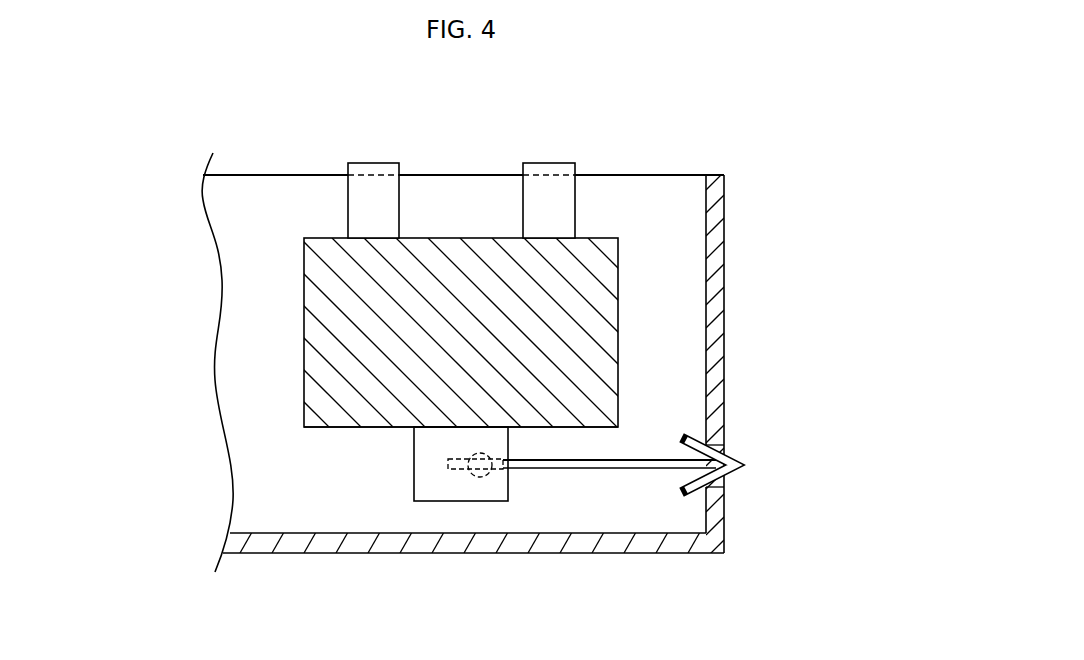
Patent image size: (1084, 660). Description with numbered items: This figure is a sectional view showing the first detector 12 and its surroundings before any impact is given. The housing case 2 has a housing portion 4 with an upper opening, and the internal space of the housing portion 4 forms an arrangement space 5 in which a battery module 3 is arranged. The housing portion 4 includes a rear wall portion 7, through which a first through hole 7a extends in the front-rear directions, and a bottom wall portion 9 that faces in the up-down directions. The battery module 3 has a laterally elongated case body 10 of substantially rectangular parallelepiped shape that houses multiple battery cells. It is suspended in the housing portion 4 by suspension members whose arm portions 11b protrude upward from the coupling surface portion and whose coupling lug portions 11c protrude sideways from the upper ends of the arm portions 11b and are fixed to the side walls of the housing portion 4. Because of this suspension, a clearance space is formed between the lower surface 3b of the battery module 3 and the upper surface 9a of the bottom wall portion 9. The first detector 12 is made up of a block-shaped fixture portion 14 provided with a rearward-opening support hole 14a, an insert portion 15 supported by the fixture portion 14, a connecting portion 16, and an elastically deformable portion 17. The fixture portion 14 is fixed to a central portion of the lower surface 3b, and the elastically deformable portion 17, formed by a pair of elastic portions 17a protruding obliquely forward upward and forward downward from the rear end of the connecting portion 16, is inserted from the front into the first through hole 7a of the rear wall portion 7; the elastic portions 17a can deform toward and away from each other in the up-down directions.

The housing case 2 is at (525, 398).
The battery module 3 is at (458, 332).
The lower surface 3b is at (345, 428).
The housing portion 4 is at (776, 376).
The arrangement space 5 is at (677, 232).
The rear wall portion 7 is at (720, 282).
The first through hole 7a is at (723, 472).
The bottom wall portion 9 is at (473, 583).
The upper surface 9a is at (558, 533).
The case body 10 is at (303, 302).
The arm portion 11b is at (480, 148).
The coupling lug portion 11c is at (377, 162).
The first detector 12 is at (640, 465).
The fixture portion 14 is at (481, 536).
The support hole 14a is at (488, 473).
The insert portion 15 is at (472, 478).
The connecting portion 16 is at (595, 470).
The elastically deformable portion 17 is at (780, 475).
The elastic portion 17a is at (715, 427).